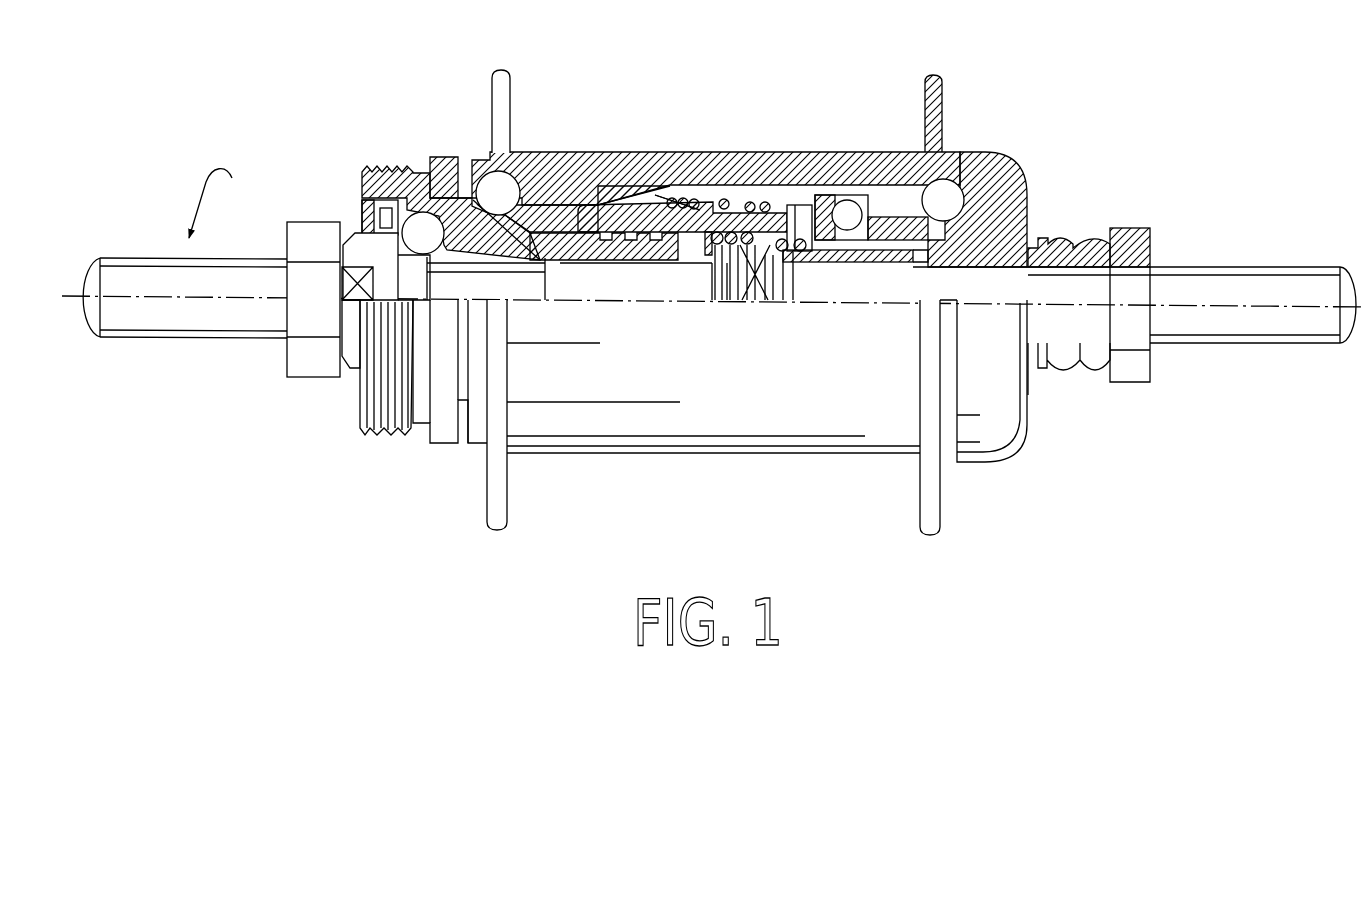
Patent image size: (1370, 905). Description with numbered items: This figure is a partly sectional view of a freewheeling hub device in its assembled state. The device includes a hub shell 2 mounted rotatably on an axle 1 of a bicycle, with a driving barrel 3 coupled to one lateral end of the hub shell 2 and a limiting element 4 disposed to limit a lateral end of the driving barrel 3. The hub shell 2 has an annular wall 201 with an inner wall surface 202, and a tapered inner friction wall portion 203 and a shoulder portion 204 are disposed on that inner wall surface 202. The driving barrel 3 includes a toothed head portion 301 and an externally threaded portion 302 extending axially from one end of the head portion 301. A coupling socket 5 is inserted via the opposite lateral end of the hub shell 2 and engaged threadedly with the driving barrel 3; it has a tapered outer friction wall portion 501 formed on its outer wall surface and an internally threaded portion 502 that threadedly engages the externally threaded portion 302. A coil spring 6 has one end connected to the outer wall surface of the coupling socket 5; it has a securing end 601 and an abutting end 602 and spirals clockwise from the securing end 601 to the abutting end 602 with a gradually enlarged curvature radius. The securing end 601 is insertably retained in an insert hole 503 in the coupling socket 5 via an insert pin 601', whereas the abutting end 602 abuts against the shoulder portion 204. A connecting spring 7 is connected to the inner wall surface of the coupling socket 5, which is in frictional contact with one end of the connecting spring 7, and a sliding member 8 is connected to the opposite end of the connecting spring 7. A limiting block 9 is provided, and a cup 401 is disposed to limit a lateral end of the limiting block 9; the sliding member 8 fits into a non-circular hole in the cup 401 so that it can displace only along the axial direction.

The axle 1 is at (1203, 263).
The hub shell 2 is at (902, 150).
The driving barrel 3 is at (380, 163).
The limiting element 4 is at (350, 231).
The coupling socket 5 is at (704, 211).
The coil spring 6 is at (750, 190).
The connecting spring 7 is at (803, 270).
The sliding member 8 is at (863, 264).
The limiting block 9 is at (836, 192).
The annular wall 201 is at (600, 197).
The inner wall surface 202 is at (560, 200).
The tapered inner friction wall portion 203 is at (594, 111).
The tapered outer friction wall portion 501 is at (585, 203).
The shoulder portion 204 is at (640, 202).
The toothed head portion 301 is at (397, 165).
The externally threaded portion 302 is at (623, 378).
The internally threaded portion 502 is at (601, 300).
The cup 401 is at (983, 245).
The securing end 601 is at (764, 322).
The insert pin 601' is at (807, 119).
The insert hole 503 is at (765, 212).
The abutting end 602 is at (668, 200).